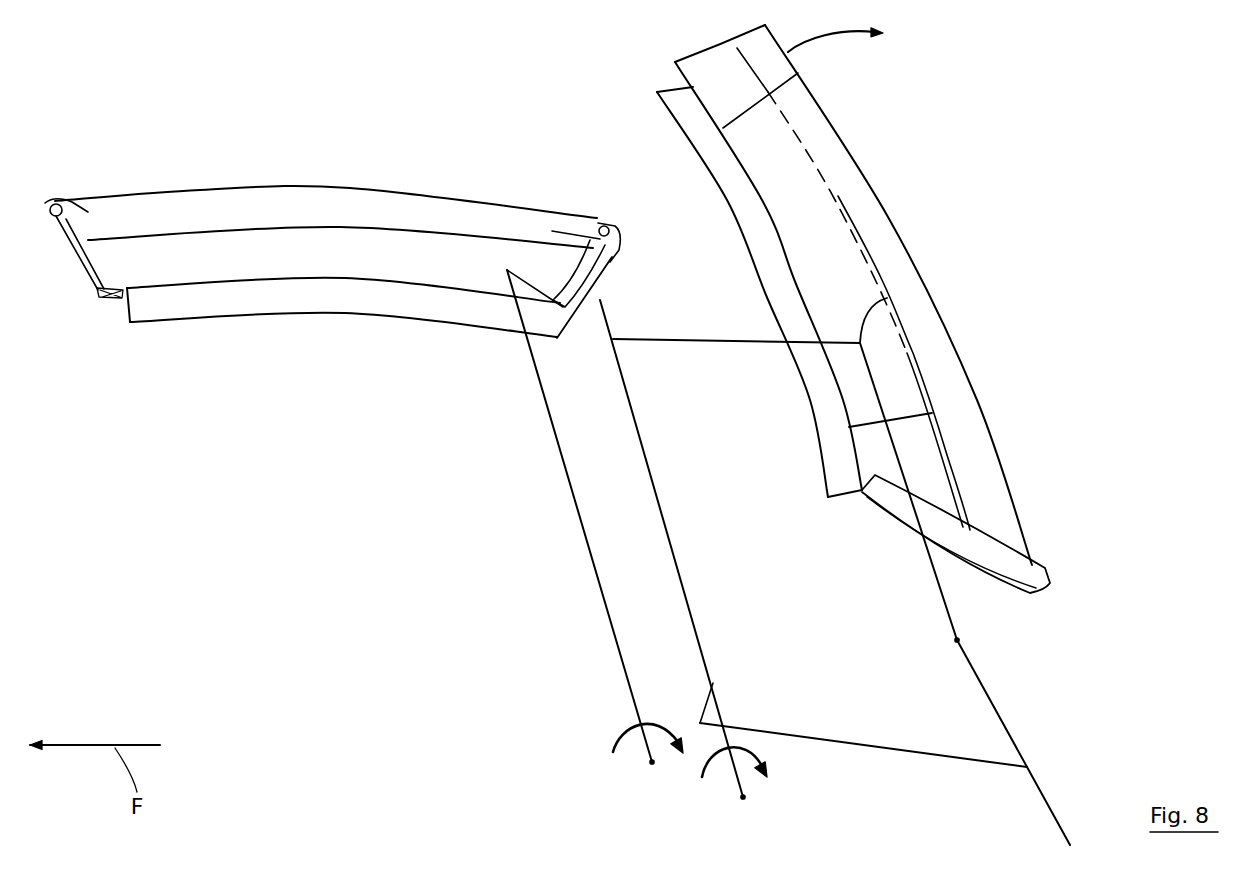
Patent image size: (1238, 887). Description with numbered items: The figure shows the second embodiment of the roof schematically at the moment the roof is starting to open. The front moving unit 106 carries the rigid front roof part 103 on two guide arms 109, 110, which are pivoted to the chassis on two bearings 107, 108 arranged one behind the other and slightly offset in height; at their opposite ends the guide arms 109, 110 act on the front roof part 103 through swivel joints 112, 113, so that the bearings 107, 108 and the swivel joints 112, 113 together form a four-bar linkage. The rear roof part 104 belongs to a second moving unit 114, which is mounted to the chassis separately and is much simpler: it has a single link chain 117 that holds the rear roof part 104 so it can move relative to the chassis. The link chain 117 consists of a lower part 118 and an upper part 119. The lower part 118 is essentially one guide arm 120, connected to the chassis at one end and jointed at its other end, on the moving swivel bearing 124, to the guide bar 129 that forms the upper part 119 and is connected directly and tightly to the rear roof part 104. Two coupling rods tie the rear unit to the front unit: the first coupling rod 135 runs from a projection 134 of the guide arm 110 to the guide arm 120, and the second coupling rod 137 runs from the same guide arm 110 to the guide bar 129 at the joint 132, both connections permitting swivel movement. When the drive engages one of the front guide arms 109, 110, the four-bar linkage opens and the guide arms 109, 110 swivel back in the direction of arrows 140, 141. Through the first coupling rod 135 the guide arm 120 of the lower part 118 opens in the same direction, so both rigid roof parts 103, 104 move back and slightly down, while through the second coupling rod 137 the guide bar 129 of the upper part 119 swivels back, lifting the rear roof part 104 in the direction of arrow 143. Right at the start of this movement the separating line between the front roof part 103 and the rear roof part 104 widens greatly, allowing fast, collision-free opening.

The front roof part 103 is at (268, 255).
The rear roof part 104 is at (830, 228).
The front moving unit 106 is at (370, 138).
The bearing 107 is at (652, 765).
The bearing 108 is at (745, 797).
The guide arm 109 is at (570, 478).
The guide arm 110 is at (677, 557).
The swivel joint 112 is at (507, 268).
The swivel joint 113 is at (600, 302).
The second moving unit 114 is at (1005, 212).
The link chain 117 is at (860, 613).
The lower part 118 is at (1058, 693).
The upper part 119 is at (930, 460).
The guide arm 120 is at (983, 687).
The swivel bearing 124 is at (957, 638).
The guide bar 129 is at (877, 392).
The joint 132 is at (882, 300).
The projection 134 is at (713, 683).
The first coupling rod 135 is at (910, 753).
The second coupling rod 137 is at (757, 343).
The arrow 140 is at (615, 750).
The arrow 141 is at (702, 777).
The arrow 143 is at (828, 32).